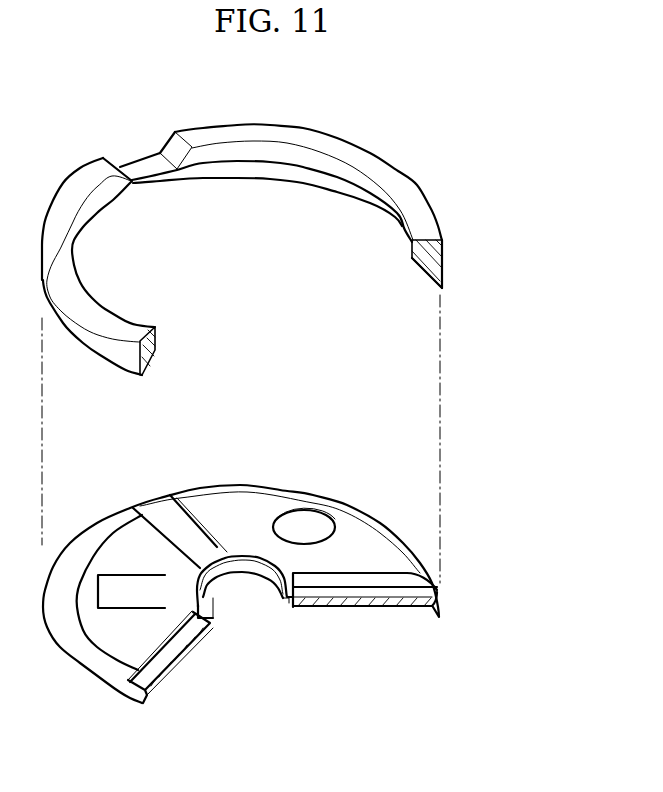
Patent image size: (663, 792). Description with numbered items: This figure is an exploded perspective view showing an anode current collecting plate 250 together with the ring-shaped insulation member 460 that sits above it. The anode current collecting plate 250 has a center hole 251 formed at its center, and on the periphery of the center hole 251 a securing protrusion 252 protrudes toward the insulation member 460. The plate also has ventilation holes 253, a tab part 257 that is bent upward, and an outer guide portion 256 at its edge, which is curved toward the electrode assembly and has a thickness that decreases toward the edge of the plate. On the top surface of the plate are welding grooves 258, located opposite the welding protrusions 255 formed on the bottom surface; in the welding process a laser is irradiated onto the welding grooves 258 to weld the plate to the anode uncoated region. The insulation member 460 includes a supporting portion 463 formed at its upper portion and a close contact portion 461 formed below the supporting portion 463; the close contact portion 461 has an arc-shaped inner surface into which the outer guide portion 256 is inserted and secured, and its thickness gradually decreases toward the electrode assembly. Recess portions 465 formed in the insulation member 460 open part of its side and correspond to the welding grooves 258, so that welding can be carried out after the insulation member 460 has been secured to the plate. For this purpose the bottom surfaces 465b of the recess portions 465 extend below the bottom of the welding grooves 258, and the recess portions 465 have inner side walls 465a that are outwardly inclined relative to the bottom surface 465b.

The insulation member 460 is at (429, 190).
The recess portions 465 is at (122, 130).
The inner side walls 465a is at (176, 124).
The bottom surfaces 465b is at (143, 165).
The supporting portion 463 is at (412, 246).
The close contact portion 461 is at (422, 273).
The anode current collecting plate 250 is at (421, 547).
The center hole 251 is at (253, 590).
The securing protrusion 252 is at (215, 568).
The ventilation holes 253 is at (308, 510).
The welding protrusions 255 is at (386, 607).
The outer guide portion 256 is at (440, 597).
The tab part 257 is at (126, 577).
The welding grooves 258 is at (155, 512).